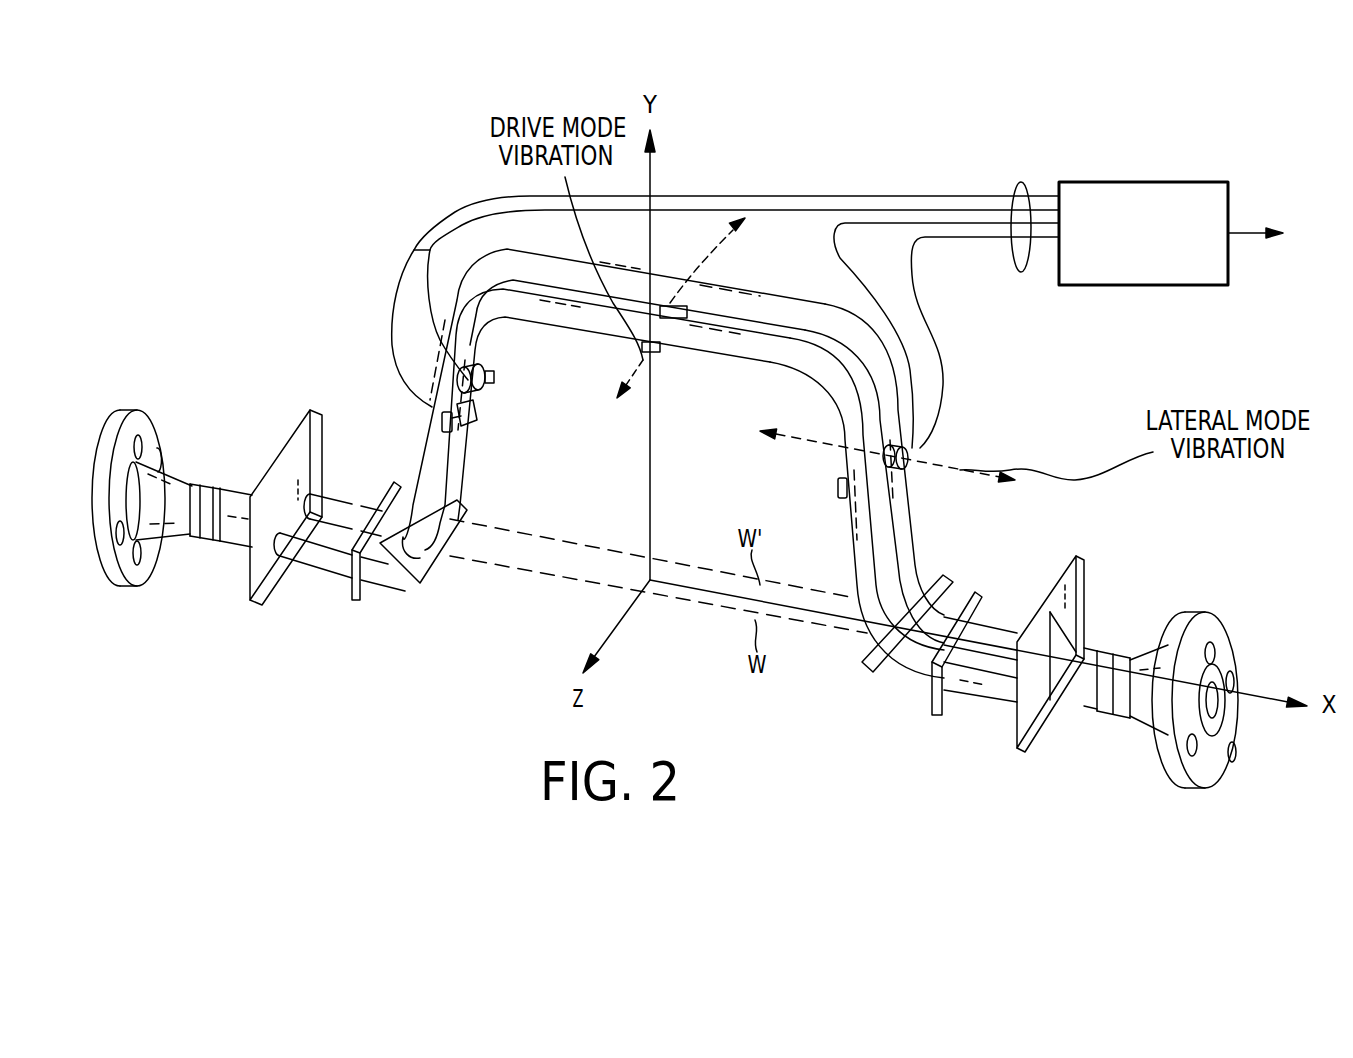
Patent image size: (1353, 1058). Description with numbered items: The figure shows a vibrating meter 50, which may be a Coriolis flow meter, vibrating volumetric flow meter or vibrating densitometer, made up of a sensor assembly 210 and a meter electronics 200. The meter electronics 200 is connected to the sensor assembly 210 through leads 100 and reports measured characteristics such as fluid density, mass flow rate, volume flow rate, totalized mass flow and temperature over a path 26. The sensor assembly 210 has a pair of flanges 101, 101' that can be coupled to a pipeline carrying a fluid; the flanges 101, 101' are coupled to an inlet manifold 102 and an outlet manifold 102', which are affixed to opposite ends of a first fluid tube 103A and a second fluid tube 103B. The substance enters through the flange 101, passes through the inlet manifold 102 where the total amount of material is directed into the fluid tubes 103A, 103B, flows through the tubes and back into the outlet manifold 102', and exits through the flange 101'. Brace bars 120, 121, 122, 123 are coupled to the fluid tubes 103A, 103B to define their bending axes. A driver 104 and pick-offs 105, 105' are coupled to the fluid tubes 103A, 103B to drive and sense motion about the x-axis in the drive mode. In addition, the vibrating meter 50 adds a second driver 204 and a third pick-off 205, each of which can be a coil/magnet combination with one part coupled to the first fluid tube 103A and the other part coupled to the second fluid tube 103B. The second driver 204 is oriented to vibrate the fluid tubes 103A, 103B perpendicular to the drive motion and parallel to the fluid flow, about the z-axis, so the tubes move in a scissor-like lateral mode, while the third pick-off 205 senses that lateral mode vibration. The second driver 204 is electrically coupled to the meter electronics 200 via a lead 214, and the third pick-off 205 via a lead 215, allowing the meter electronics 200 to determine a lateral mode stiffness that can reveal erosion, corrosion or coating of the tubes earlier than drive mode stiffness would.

The path 26 is at (1250, 232).
The vibrating meter 50 is at (1058, 436).
The leads 100 is at (1021, 273).
The flange 101 is at (142, 469).
The flange 101' is at (1195, 670).
The inlet manifold 102 is at (286, 490).
The outlet manifold 102' is at (1064, 626).
The first fluid tube 103A is at (545, 320).
The second fluid tube 103B is at (600, 268).
The driver 104 is at (688, 385).
The pick-off 105 is at (513, 425).
The pick-off 105' is at (793, 474).
The brace bar 120 is at (360, 602).
The brace bar 121 is at (930, 700).
The brace bar 122 is at (432, 573).
The brace bar 123 is at (868, 663).
The meter electronics 200 is at (1165, 287).
The second driver 204 is at (945, 452).
The third pick-off 205 is at (512, 388).
The sensor assembly 210 is at (295, 318).
The lead 214 is at (908, 275).
The lead 215 is at (722, 197).